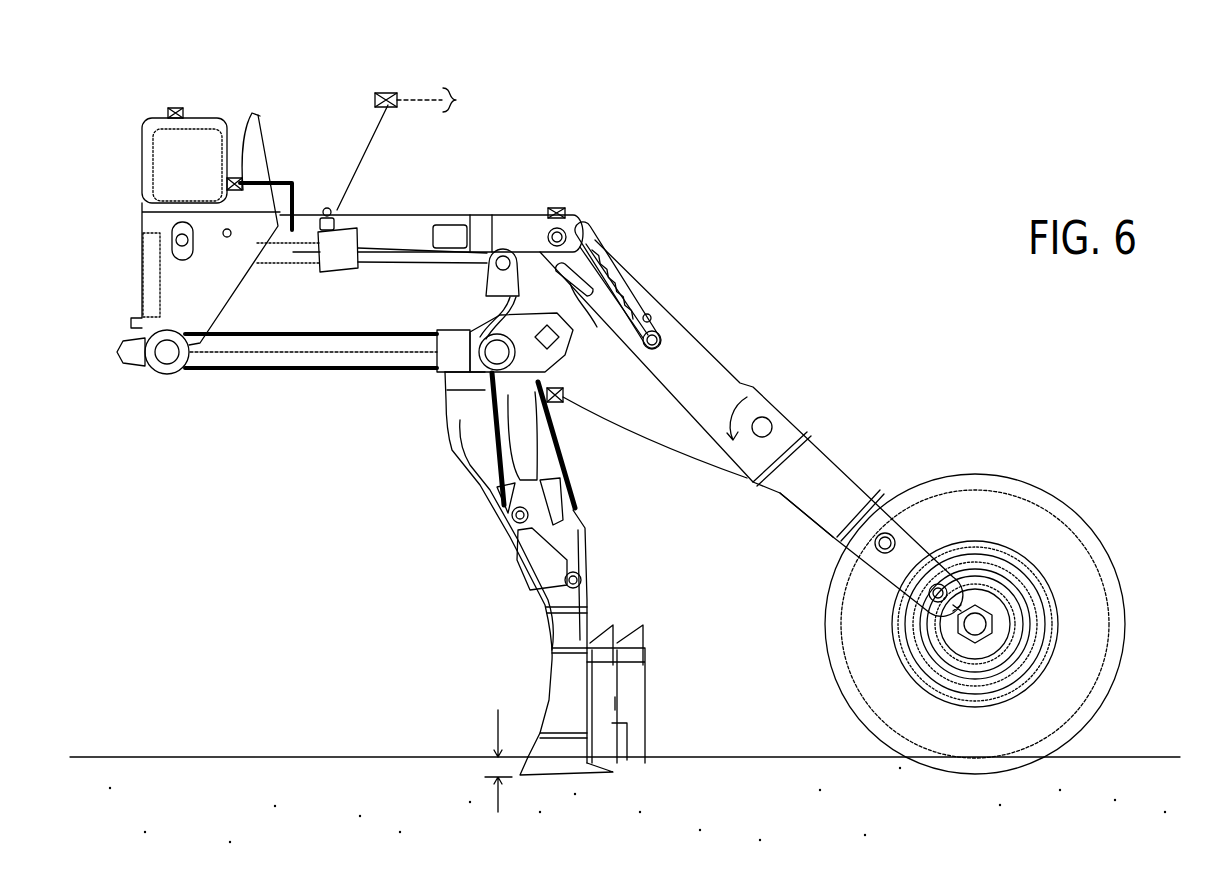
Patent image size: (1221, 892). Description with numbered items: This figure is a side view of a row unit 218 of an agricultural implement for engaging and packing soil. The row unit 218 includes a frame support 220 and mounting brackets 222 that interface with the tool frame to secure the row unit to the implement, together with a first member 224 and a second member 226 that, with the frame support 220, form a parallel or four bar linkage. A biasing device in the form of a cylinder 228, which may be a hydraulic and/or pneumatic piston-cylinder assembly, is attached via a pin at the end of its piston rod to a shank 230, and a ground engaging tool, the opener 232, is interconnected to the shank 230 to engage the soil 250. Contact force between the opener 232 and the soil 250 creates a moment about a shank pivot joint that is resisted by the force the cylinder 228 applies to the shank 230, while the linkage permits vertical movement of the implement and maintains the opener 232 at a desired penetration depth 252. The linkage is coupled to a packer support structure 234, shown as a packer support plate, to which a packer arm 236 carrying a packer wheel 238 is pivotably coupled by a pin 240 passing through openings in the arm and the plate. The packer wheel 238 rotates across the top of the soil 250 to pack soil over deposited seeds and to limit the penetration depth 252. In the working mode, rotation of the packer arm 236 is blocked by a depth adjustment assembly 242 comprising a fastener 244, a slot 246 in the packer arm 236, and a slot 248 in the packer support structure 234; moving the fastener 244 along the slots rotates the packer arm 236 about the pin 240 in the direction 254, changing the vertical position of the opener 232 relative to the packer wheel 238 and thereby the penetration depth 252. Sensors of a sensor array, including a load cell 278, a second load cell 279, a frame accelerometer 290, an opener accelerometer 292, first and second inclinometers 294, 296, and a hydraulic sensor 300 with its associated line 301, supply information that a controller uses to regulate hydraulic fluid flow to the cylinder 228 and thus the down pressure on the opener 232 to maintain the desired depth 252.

The row unit 218 is at (673, 170).
The frame support 220 is at (257, 157).
The mounting brackets 222 is at (193, 115).
The first member 224 is at (287, 367).
The second member 226 is at (397, 215).
The cylinder 228 is at (337, 260).
The shank 230 is at (577, 482).
The opener 232 is at (526, 757).
The packer support structure 234 is at (628, 410).
The packer arm 236 is at (717, 370).
The packer wheel 238 is at (990, 482).
The pin 240 is at (762, 417).
The depth adjustment assembly 242 is at (680, 216).
The fastener 244 is at (660, 334).
The slot 246 is at (640, 316).
The slot 248 is at (567, 327).
The soil 250 is at (722, 767).
The penetration depth 252 is at (497, 768).
The direction 254 is at (715, 410).
The load cell 278 is at (655, 317).
The second load cell 279 is at (962, 607).
The frame accelerometer 290 is at (167, 112).
The opener accelerometer 292 is at (555, 208).
The first inclinometer 294 is at (247, 130).
The second inclinometer 296 is at (545, 392).
The hydraulic sensor 300 is at (388, 92).
The signal line 301 is at (370, 135).